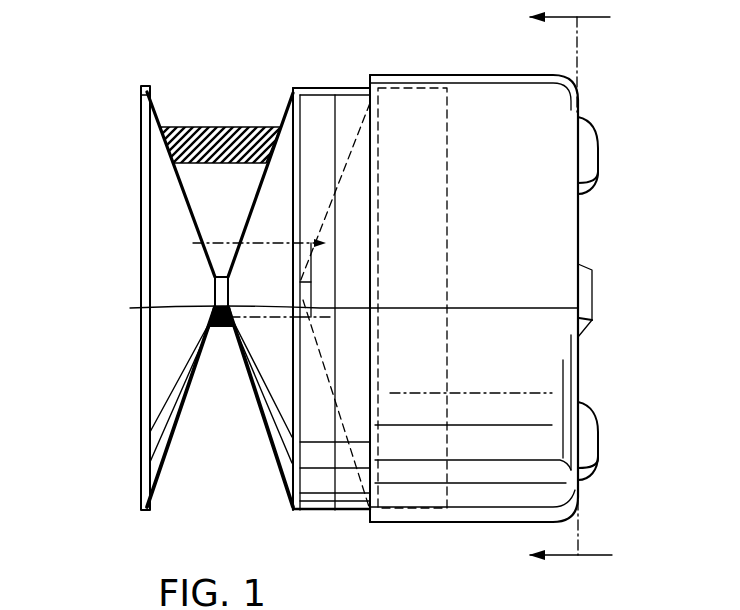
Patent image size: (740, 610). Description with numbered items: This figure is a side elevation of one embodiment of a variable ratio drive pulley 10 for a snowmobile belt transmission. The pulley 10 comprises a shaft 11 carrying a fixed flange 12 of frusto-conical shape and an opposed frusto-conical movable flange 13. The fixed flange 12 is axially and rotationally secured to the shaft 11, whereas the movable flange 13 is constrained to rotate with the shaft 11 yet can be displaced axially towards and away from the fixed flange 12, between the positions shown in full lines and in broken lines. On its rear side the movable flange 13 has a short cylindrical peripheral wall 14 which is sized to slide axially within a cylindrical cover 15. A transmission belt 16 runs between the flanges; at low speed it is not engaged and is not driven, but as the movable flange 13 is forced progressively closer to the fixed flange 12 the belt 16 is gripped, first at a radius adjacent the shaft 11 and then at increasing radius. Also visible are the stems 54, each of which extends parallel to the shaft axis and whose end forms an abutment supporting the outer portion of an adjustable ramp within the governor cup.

The drive pulley 10 is at (130, 135).
The shaft 11 is at (215, 284).
The fixed flange 12 is at (147, 380).
The movable flange 13 is at (284, 158).
The cylindrical peripheral wall 14 is at (313, 107).
The cylindrical cover 15 is at (457, 97).
The transmission belt 16 is at (213, 128).
The stem 54 is at (598, 158).